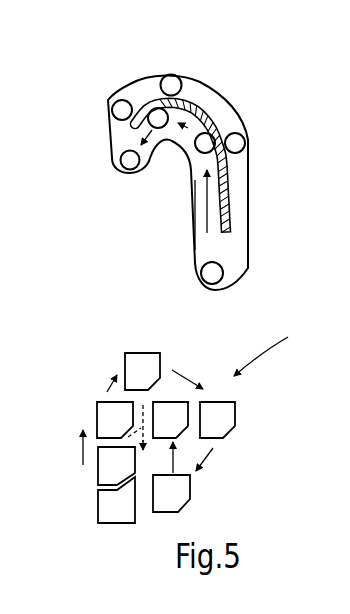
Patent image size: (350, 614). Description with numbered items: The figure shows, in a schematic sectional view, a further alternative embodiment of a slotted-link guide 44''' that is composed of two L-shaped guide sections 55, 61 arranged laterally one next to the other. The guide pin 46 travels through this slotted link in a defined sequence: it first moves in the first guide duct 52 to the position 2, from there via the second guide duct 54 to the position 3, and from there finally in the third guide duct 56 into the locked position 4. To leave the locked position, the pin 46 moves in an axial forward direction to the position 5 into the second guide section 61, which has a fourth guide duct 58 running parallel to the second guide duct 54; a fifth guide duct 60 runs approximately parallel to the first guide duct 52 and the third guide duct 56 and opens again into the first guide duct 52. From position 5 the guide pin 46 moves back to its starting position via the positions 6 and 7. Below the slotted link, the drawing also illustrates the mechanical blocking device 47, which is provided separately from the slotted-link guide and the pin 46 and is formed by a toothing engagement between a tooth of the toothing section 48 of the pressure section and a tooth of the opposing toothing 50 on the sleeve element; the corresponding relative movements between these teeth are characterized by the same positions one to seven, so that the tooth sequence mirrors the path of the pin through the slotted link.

The slotted-link guide 44''' is at (204, 167).
The fourth guide duct 58 is at (147, 88).
The first guide duct 52 is at (198, 223).
The position six 6 is at (171, 74).
The position five 5 is at (111, 107).
The position seven 7 is at (242, 139).
The position three 3 is at (181, 138).
The locked position 4 is at (126, 174).
The position two 2 is at (181, 166).
The guide pin 46 is at (208, 275).
The first guide section 55 is at (205, 237).
The second guide duct 54 is at (178, 136).
The third guide duct 56 is at (110, 152).
The second guide section 61 is at (235, 175).
The fifth guide duct 60 is at (238, 203).
The mechanical blocking device 47 is at (199, 401).
The toothing section 48 is at (182, 492).
The opposing toothing 50 is at (118, 507).